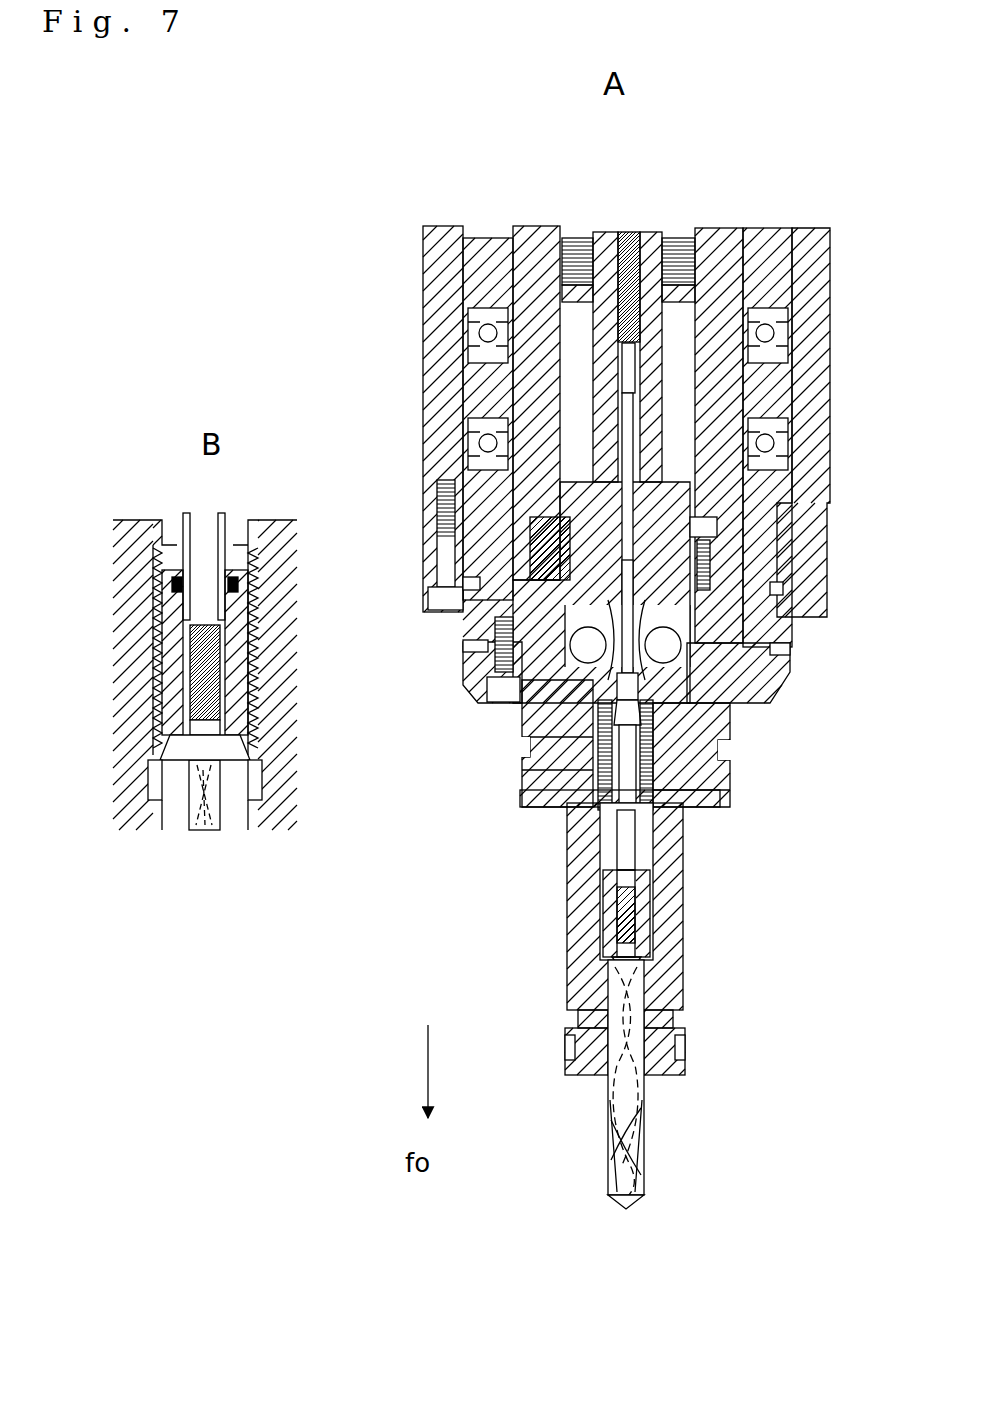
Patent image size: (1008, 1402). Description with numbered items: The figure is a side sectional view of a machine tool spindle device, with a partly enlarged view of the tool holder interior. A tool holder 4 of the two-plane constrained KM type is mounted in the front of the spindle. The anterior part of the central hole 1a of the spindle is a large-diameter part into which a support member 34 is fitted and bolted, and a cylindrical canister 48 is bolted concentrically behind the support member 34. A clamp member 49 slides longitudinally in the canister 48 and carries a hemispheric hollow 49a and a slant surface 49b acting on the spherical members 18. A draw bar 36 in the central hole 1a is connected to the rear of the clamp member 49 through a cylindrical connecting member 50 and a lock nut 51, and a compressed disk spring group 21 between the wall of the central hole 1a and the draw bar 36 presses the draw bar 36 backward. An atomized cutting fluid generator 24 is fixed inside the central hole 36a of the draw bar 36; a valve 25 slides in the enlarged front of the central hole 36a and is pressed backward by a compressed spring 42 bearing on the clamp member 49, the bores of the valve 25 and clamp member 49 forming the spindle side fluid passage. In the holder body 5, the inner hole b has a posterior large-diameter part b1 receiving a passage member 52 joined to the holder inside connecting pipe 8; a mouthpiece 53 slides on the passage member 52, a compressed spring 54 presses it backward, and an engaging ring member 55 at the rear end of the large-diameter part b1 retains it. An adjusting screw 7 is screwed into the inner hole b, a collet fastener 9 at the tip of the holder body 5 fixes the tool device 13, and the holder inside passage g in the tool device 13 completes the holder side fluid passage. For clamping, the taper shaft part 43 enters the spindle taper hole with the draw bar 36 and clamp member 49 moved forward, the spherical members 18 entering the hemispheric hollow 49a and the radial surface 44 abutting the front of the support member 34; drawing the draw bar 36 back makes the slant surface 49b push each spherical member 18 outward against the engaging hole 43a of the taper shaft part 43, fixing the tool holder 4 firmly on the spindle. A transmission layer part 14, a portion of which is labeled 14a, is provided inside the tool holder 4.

The central hole 1a is at (585, 318).
The tool holder 4 is at (512, 905).
The holder body 5 is at (283, 785).
The adjusting screw 7 is at (652, 913).
The holder inside connecting pipe 8 is at (605, 845).
The collet fastener 9 is at (686, 1050).
The tool device 13 is at (612, 1098).
The transmission layer part 14 is at (600, 930).
The elastic member end 14a is at (221, 665).
The spherical member 18 is at (467, 647).
The compressed disk spring group 21 is at (576, 232).
The atomized cutting fluid generator 24 is at (615, 303).
The valve 25 is at (705, 330).
The support member 34 is at (775, 688).
The draw bar 36 is at (648, 232).
The central hole 36a is at (742, 300).
The compressed spring 42 is at (705, 378).
The taper shaft part 43 is at (477, 697).
The engaging hole 43a is at (690, 660).
The radial surface 44 is at (732, 697).
The canister 48 is at (527, 537).
The clamp member 49 is at (445, 578).
The hemispheric hollow 49a is at (473, 617).
The slant surface 49b is at (465, 668).
The cylindrical connecting member 50 is at (520, 420).
The lock nut 51 is at (585, 352).
The passage member 52 is at (565, 820).
The mouthpiece 53 is at (525, 758).
The compressed spring 54 is at (525, 792).
The engaging ring member 55 is at (527, 728).
The inner hole b is at (650, 848).
The large-diameter part b1 is at (730, 803).
The holder inside passage g is at (640, 1140).